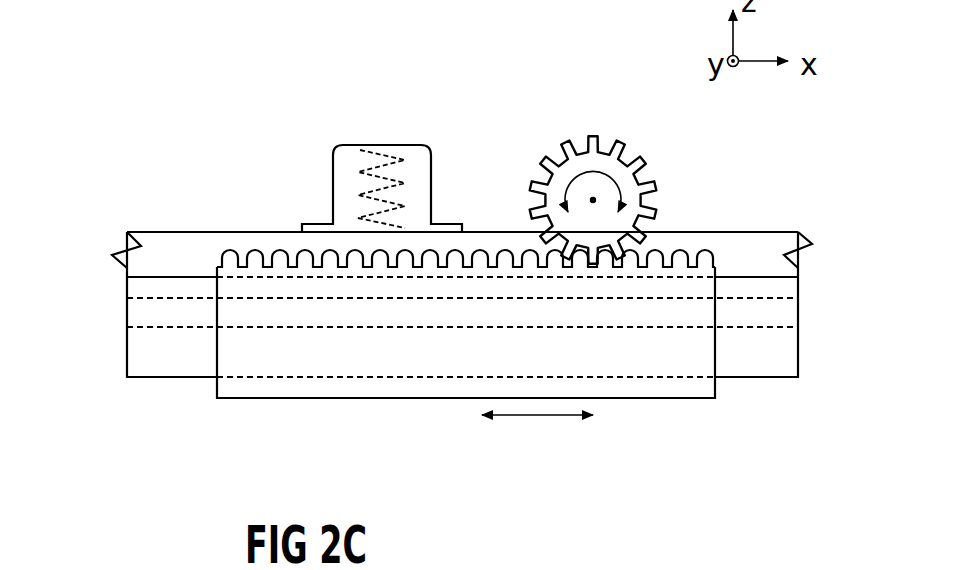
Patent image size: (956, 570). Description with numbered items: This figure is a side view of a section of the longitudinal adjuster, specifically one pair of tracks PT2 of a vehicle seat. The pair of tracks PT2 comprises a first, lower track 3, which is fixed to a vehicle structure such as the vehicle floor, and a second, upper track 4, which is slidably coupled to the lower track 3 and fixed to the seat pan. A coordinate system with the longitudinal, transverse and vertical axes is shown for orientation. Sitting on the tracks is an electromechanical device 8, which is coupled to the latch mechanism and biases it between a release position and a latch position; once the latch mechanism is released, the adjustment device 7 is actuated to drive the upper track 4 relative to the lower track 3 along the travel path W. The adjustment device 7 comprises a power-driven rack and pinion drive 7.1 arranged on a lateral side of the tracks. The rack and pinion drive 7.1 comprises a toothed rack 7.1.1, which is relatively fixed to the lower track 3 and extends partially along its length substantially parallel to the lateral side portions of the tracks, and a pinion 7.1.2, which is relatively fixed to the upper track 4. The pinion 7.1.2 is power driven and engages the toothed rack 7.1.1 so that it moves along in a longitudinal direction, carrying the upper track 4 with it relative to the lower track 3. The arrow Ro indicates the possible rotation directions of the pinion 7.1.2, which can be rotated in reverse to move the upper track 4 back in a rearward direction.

The pair of tracks PT2 is at (190, 188).
The lower track 3 is at (138, 358).
The upper track 4 is at (137, 263).
The adjustment device 7 is at (563, 125).
The rack and pinion drive 7.1 is at (670, 210).
The toothed rack 7.1.1 is at (682, 390).
The pinion 7.1.2 is at (613, 152).
The electromechanical device 8 is at (351, 140).
The rotation directions of the pinion Ro is at (566, 188).
The travel path W is at (537, 439).